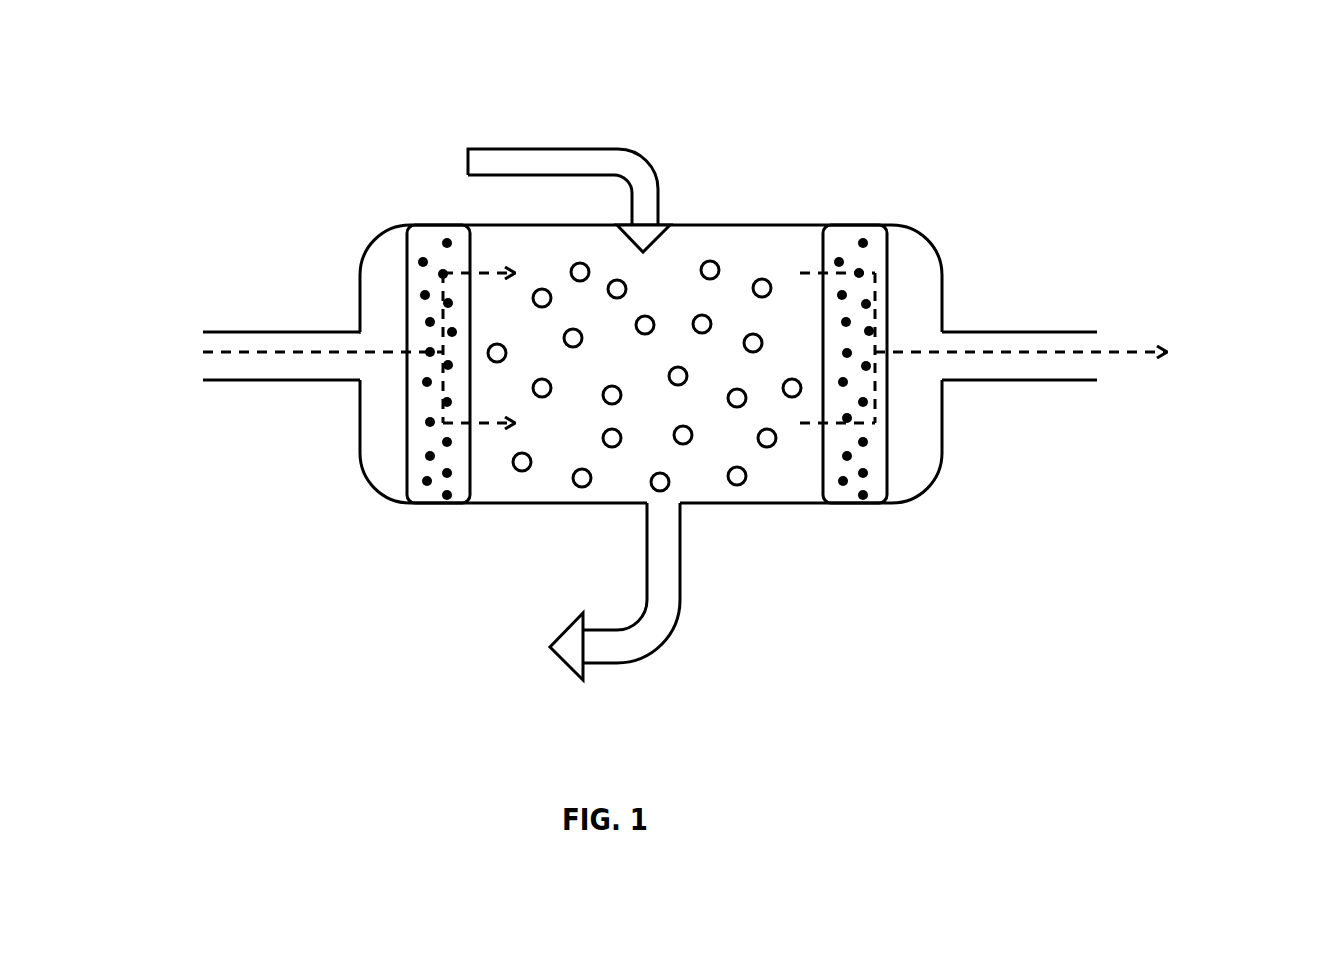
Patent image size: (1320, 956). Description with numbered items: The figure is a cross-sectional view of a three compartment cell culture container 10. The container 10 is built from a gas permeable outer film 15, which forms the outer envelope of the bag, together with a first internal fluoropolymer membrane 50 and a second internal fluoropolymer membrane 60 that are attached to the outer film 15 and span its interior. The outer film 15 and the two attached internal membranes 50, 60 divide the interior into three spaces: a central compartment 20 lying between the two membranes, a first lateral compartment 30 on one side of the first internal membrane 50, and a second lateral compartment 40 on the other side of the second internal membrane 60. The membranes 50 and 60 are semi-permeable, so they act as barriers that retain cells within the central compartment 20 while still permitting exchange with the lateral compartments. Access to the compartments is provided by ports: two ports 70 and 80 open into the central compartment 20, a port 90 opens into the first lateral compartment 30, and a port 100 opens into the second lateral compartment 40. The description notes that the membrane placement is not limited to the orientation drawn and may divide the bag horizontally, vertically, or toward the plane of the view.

The three compartment cell culture container 10 is at (237, 105).
The gas permeable outer film 15 is at (780, 223).
The central compartment 20 is at (735, 272).
The first lateral compartment 30 is at (392, 450).
The second lateral compartment 40 is at (910, 450).
The first internal fluoropolymer membrane 50 is at (428, 492).
The second internal fluoropolymer membrane 60 is at (848, 493).
The port 70 is at (643, 195).
The port 80 is at (665, 555).
The port 90 is at (268, 347).
The port 100 is at (1105, 347).